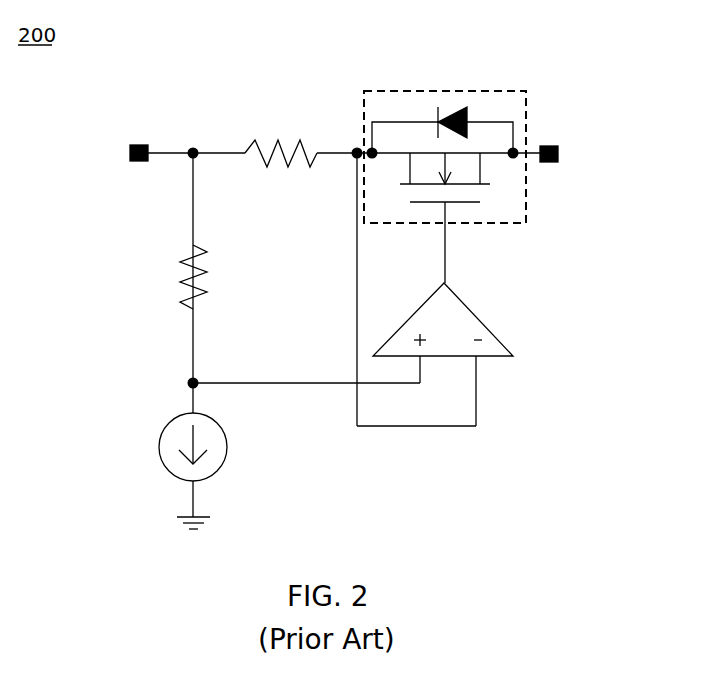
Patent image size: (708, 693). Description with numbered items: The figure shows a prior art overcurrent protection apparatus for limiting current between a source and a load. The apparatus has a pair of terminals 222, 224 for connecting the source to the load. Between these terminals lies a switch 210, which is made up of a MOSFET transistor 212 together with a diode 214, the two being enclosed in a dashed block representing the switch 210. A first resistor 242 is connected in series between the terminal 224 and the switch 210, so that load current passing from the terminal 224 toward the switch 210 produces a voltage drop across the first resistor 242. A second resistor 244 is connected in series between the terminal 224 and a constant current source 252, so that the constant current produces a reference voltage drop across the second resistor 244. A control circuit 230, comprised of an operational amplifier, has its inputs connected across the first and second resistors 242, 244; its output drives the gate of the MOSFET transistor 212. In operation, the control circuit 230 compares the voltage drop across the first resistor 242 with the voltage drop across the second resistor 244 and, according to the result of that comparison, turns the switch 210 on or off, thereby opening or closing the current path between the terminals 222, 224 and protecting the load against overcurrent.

The switch 210 is at (447, 153).
The MOSFET transistor 212 is at (452, 203).
The diode 214 is at (458, 110).
The terminal 222 is at (558, 147).
The terminal 224 is at (134, 146).
The control circuit 230 is at (484, 324).
The first resistor 242 is at (253, 135).
The second resistor 244 is at (166, 260).
The constant current source 252 is at (166, 430).